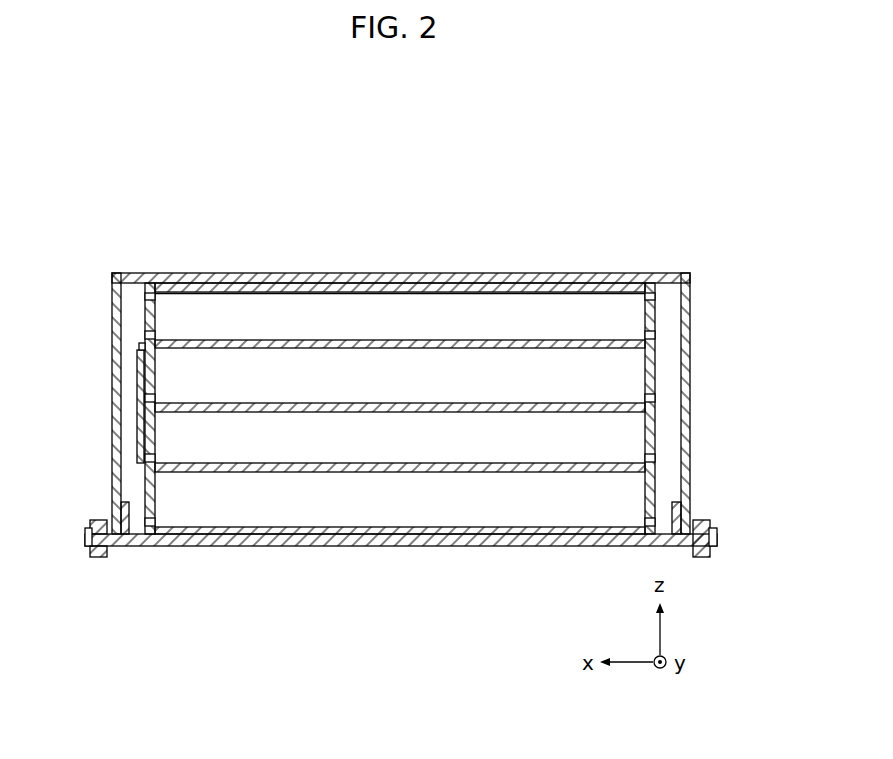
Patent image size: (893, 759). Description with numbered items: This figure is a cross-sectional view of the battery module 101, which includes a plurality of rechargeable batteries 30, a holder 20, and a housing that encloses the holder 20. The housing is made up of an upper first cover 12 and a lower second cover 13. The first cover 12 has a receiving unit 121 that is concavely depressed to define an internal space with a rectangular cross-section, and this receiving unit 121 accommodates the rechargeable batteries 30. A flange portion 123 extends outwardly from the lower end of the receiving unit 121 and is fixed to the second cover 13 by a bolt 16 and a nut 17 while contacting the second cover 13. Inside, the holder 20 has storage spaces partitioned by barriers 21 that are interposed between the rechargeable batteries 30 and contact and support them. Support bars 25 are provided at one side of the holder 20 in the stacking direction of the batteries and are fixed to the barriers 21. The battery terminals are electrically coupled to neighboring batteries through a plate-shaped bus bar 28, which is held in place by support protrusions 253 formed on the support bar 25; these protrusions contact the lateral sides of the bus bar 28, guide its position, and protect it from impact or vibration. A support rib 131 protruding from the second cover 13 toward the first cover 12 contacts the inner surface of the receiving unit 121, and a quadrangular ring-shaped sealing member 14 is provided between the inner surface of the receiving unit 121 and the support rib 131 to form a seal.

The battery module 101 is at (641, 217).
The first cover 12 is at (432, 403).
The receiving unit 121 is at (691, 393).
The flange portion 123 is at (716, 546).
The second cover 13 is at (418, 566).
The support rib 131 is at (138, 534).
The sealing member 14 is at (120, 517).
The bolt 16 is at (90, 522).
The nut 17 is at (96, 557).
The holder 20 is at (426, 270).
The barrier 21 is at (372, 293).
The support bar 25 is at (150, 273).
The support protrusion 253 is at (139, 345).
The bus bar 28 is at (97, 400).
The rechargeable battery 30 is at (296, 300).